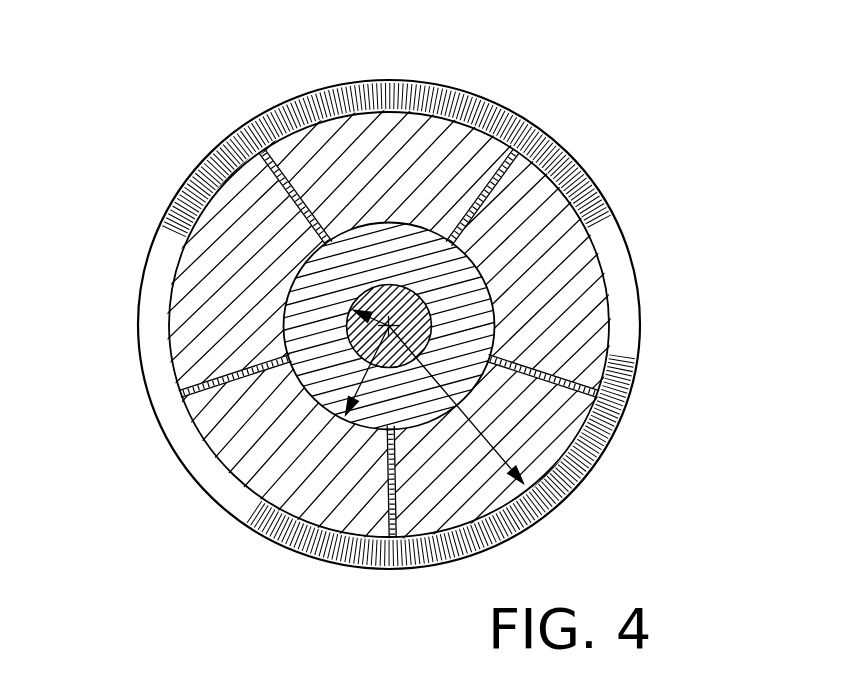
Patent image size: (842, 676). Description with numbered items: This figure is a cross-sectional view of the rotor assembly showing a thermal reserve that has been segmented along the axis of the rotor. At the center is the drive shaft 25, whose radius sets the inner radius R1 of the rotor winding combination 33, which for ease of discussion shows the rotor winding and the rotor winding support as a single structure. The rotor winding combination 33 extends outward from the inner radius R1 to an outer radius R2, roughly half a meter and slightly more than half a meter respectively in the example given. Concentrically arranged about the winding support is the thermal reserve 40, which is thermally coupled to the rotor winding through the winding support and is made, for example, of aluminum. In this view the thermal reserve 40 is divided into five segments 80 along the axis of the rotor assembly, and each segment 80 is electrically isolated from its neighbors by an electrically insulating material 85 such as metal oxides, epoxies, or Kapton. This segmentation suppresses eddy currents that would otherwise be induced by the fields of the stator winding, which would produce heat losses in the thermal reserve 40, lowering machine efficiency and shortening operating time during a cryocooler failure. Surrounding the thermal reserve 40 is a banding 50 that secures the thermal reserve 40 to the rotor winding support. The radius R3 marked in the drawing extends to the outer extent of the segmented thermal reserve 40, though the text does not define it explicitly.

The drive shaft 25 is at (480, 270).
The rotor winding combination 33 is at (301, 304).
The thermal reserve 40 is at (230, 437).
The banding 50 is at (622, 302).
The segment 80 is at (557, 257).
The electrically insulating material 85 is at (548, 356).
The inner radius R1 is at (388, 300).
The outer radius R2 is at (358, 390).
The body radius R3 is at (495, 443).